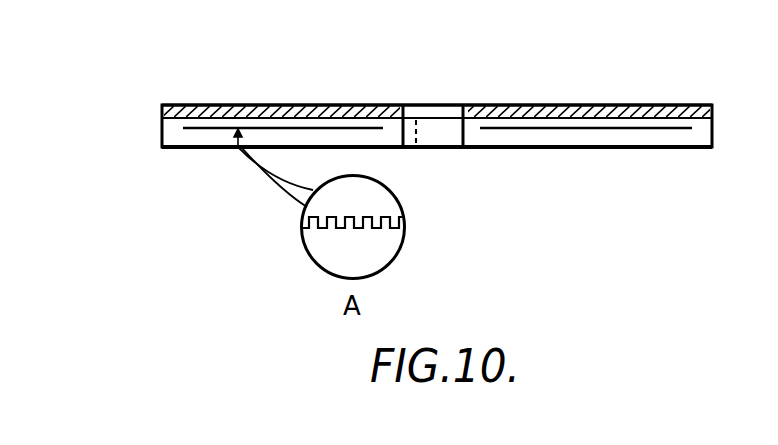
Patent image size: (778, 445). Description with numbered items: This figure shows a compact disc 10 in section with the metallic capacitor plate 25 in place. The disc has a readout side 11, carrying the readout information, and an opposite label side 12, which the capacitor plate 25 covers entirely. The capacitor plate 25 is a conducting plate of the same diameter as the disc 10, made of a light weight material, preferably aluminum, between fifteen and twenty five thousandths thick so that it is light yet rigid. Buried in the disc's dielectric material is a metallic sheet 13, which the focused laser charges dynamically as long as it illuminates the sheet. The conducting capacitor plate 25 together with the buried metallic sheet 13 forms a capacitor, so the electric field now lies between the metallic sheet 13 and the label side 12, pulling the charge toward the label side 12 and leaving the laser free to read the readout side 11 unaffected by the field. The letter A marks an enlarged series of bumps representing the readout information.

The compact disc 10 is at (163, 138).
The readout side of the disc 11 is at (218, 153).
The label side of the disc 12 is at (163, 118).
The buried metallic sheet 13 is at (592, 130).
The capacitor plate 25 is at (352, 107).